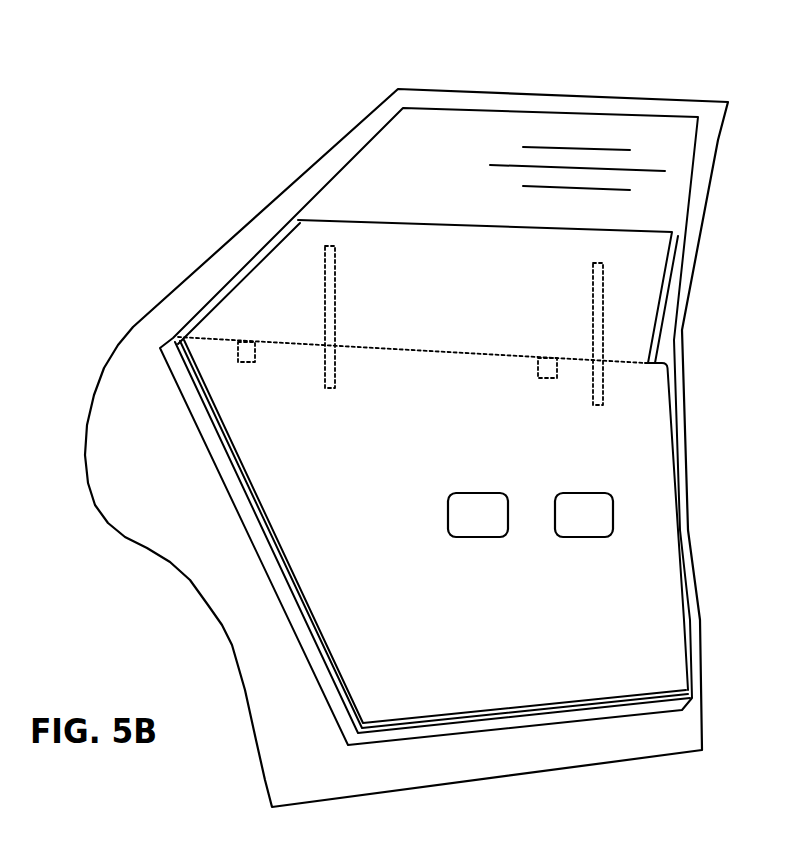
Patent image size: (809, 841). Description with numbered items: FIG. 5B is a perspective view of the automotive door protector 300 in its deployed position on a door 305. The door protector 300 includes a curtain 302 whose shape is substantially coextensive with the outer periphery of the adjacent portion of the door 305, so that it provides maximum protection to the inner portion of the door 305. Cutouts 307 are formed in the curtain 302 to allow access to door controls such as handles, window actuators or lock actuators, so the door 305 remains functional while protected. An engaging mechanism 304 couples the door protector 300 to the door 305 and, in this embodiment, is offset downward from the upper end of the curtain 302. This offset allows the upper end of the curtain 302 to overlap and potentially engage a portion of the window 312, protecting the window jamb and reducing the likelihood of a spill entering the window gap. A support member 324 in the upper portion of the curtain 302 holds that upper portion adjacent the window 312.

The automotive door protector 300 is at (275, 272).
The curtain 302 is at (627, 437).
The engaging mechanism 304 is at (255, 352).
The door 305 is at (600, 98).
The cutouts 307 is at (613, 512).
The window 312 is at (403, 168).
The support member 324 is at (335, 310).